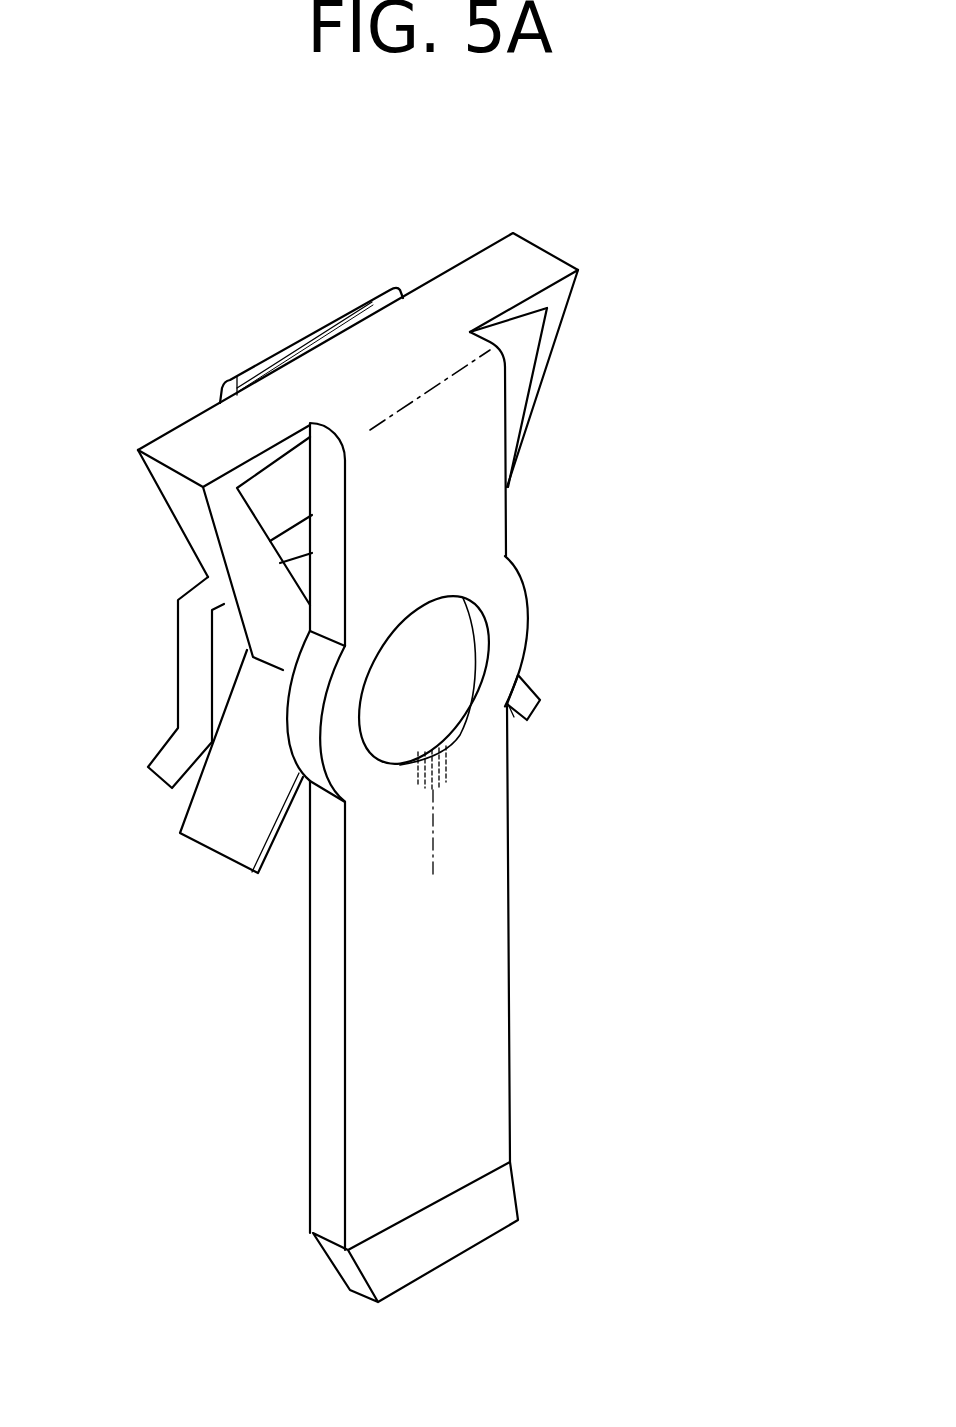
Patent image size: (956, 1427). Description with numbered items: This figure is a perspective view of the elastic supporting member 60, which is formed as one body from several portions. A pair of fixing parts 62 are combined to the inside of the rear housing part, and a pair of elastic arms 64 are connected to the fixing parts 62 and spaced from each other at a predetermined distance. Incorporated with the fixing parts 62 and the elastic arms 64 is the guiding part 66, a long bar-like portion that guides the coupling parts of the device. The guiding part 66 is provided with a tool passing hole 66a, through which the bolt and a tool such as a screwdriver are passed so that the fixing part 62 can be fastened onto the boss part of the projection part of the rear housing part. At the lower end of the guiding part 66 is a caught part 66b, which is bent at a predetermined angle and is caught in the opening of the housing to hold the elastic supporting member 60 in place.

The elastic supporting member 60 is at (708, 234).
The fixing part 62 is at (166, 752).
The elastic arm 64 is at (562, 343).
The guiding part 66 is at (487, 950).
The tool passing hole 66a is at (418, 714).
The caught part 66b is at (487, 1200).